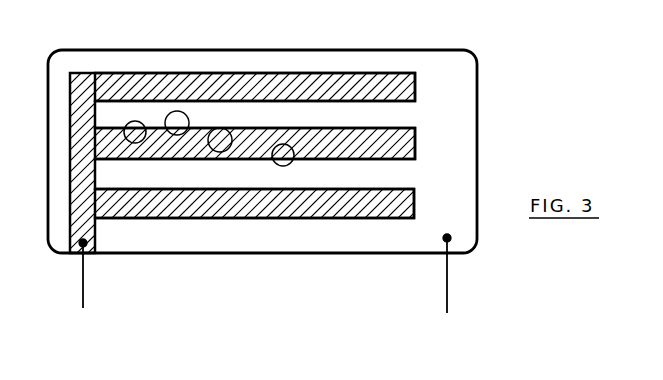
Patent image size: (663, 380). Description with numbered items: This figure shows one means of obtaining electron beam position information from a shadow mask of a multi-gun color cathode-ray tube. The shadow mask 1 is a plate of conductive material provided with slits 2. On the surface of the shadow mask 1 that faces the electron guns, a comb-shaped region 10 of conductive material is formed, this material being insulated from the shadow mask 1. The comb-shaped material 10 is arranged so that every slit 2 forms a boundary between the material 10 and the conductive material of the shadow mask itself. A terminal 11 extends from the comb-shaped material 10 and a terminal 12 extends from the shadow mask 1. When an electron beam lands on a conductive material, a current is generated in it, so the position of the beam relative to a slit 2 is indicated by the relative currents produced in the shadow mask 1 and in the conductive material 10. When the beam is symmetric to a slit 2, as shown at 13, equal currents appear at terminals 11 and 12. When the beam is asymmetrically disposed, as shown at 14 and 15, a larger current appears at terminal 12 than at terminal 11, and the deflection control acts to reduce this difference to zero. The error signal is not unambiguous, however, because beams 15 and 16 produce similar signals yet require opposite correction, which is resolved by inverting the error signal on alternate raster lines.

The shadow mask 1 is at (333, 50).
The slits 2 is at (415, 100).
The comb-shaped region of conductive material 10 is at (152, 82).
The terminal 11 is at (82, 290).
The terminal 12 is at (446, 288).
The beam symmetric to a slit 13 is at (130, 123).
The asymmetrically disposed beam 14 is at (186, 117).
The asymmetrically disposed beam 15 is at (224, 129).
The beam 16 is at (292, 164).